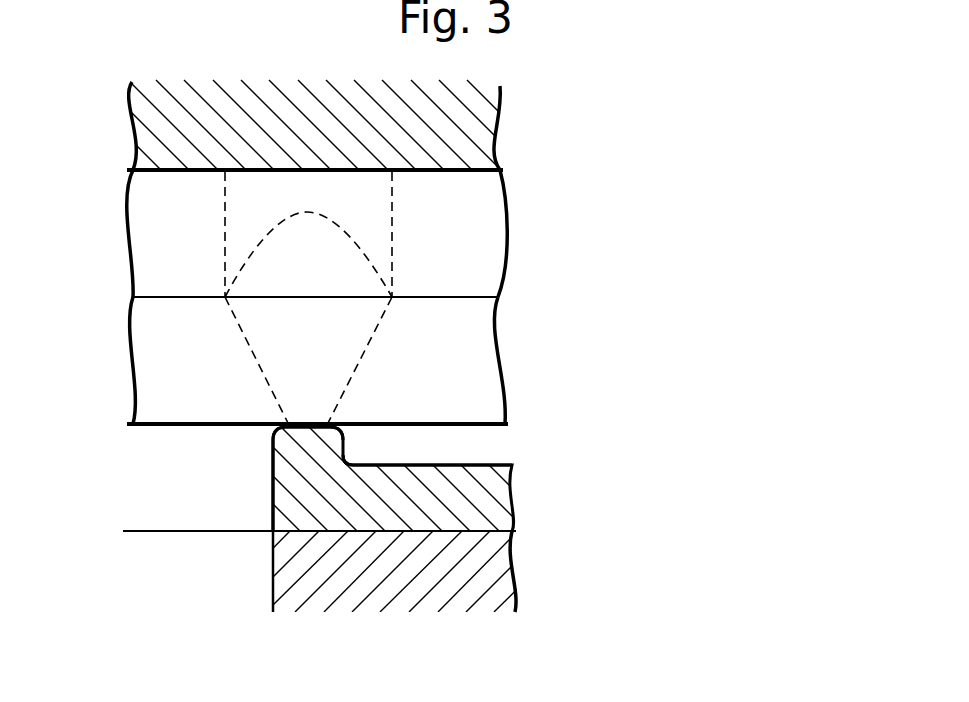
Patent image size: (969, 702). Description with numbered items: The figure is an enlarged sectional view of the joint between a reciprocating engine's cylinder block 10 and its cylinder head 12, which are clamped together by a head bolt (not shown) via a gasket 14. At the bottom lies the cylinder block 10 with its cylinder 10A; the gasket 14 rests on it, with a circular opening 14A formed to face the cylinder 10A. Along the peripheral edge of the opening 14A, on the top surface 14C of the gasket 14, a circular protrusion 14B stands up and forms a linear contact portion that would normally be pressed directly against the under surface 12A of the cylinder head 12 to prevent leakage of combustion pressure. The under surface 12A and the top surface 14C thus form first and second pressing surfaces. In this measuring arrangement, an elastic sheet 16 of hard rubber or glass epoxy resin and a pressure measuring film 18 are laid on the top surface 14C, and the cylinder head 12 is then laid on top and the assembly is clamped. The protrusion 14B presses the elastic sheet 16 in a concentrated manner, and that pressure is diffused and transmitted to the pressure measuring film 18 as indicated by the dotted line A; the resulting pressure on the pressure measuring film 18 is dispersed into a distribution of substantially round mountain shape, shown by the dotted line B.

The cylinder head 12 is at (522, 85).
The under surface of the cylinder head 12A is at (152, 172).
The pressure measuring film 18 is at (522, 172).
The elastic sheet 16 is at (522, 299).
The gasket 14 is at (522, 531).
The circular opening 14A is at (273, 490).
The circular protrusion 14B is at (282, 428).
The top surface of the gasket 14C is at (462, 465).
The cylinder block 10 is at (522, 533).
The cylinder 10A is at (273, 583).
The dotted line A is at (249, 354).
The dotted line B is at (263, 246).